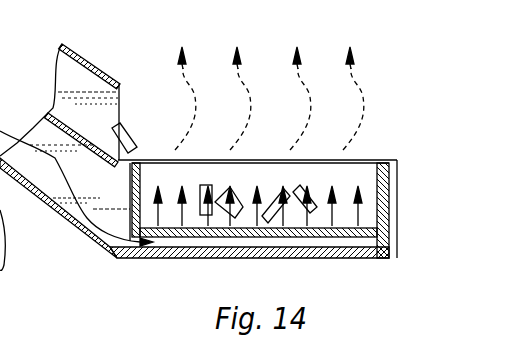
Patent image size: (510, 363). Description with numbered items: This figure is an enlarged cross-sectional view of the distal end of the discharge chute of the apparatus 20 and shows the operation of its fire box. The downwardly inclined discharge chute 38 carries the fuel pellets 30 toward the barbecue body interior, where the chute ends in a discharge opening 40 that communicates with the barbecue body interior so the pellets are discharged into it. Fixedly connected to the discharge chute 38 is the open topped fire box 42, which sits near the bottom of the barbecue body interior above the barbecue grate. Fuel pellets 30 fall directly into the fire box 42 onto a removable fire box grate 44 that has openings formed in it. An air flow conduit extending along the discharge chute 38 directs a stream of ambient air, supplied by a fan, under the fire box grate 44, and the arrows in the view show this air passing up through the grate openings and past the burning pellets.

The apparatus 20 is at (165, 270).
The fuel pellets 30 is at (134, 131).
The discharge chute 38 is at (88, 47).
The discharge opening 40 is at (121, 83).
The fire box 42 is at (400, 241).
The fire box grate 44 is at (246, 173).